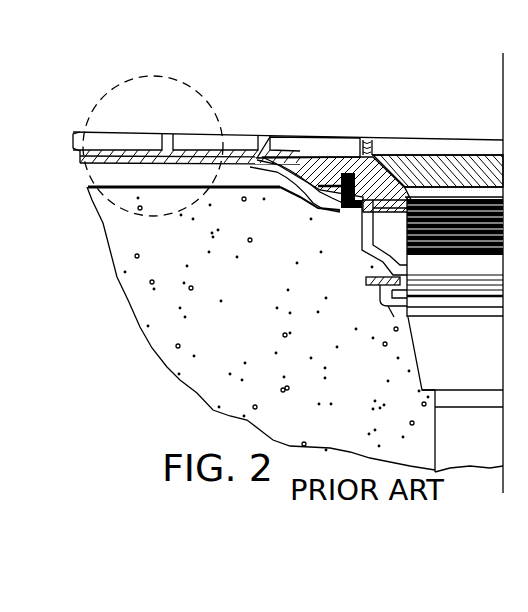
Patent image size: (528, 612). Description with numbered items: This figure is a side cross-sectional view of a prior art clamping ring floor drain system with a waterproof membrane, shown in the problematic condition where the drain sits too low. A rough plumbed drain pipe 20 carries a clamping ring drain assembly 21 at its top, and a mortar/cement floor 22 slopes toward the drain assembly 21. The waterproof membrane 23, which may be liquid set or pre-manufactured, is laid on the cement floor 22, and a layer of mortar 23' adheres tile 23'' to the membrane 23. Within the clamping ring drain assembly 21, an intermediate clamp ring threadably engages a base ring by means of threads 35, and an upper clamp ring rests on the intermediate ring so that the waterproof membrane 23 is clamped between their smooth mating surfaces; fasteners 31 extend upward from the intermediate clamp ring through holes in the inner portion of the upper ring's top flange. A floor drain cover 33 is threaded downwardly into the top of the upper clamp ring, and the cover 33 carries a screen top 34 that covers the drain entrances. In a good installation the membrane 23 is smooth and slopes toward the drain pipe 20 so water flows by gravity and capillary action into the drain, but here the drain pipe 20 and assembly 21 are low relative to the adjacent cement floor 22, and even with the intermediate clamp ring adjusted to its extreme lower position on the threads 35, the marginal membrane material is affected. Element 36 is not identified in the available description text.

The rough plumbed drain pipe 20 is at (423, 432).
The clamping ring drain assembly 21 is at (441, 108).
The mortar/cement floor 22 is at (165, 184).
The waterproof membrane 23 is at (209, 147).
The layer of mortar 23' is at (365, 147).
The tile 23'' is at (380, 130).
The fasteners 31 is at (345, 208).
The floor drain cover 33 is at (460, 170).
The screen top 34 is at (487, 140).
The threads 35 is at (376, 290).
The seal 36 is at (374, 246).